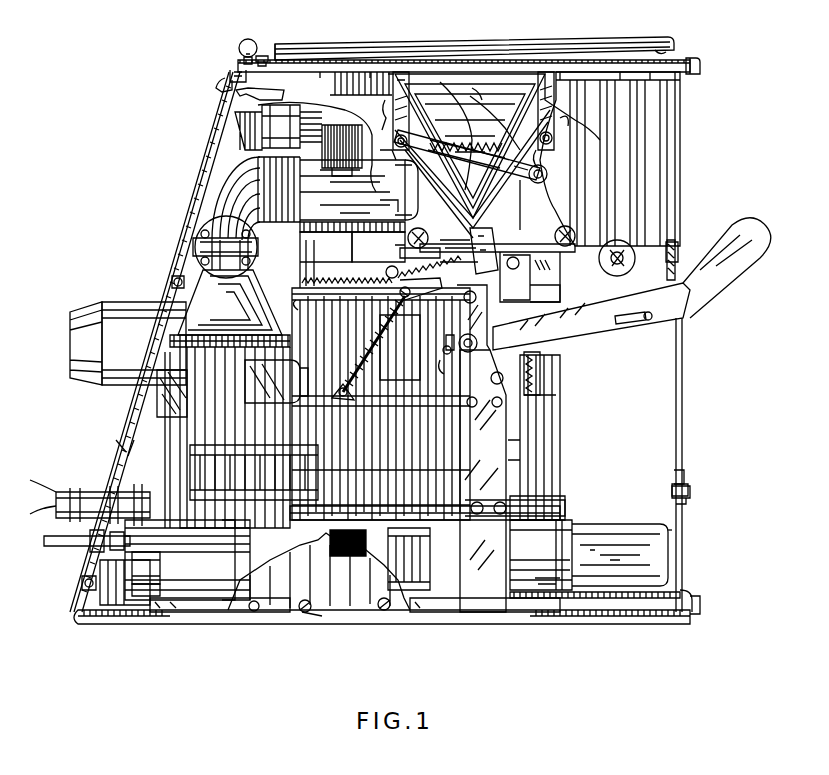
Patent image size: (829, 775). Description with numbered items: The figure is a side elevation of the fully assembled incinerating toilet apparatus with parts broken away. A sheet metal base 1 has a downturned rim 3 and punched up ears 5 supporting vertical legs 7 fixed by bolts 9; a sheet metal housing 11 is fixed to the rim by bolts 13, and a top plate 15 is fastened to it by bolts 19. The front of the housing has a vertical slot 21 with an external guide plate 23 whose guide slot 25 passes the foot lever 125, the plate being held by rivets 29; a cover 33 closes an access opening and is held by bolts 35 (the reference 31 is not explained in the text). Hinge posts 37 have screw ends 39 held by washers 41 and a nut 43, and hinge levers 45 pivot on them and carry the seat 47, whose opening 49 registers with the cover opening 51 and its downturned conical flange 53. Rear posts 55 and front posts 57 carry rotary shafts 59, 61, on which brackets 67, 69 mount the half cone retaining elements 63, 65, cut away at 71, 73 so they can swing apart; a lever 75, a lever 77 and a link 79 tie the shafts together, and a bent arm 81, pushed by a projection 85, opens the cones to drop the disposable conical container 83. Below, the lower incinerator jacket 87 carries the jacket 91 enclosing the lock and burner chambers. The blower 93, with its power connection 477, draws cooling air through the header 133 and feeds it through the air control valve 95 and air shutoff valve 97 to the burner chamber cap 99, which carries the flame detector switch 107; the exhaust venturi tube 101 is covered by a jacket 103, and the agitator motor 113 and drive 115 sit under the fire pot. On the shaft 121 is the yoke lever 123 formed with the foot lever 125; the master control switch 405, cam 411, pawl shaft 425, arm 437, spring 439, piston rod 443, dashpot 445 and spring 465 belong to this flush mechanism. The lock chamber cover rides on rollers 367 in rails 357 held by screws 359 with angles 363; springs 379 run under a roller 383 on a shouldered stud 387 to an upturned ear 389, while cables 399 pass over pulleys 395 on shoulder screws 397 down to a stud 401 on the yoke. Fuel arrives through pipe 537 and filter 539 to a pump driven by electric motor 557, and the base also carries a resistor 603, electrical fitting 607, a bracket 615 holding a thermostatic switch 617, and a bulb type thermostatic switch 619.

The sheet metal base 1 is at (104, 616).
The downturned rim or flange 3 is at (146, 614).
The punched up ears 5 is at (512, 568).
The vertical legs 7 is at (464, 476).
The bolts 9 is at (514, 574).
The sheet metal housing 11 is at (208, 162).
The bolts 13 is at (302, 614).
The top plate 15 is at (668, 63).
The bolts 19 is at (701, 66).
The vertical slot 21 is at (676, 458).
The external guide plate 23 is at (684, 464).
The guide slot 25 is at (684, 418).
The rivets 29 is at (682, 258).
The frame rod 31 is at (133, 456).
The cover 33 is at (116, 450).
The bolts 35 is at (170, 284).
The hinge posts 37 is at (238, 42).
The screw ends 39 is at (238, 96).
The washers 41 is at (236, 68).
The nut 43 is at (232, 90).
The hinge levers 45 is at (266, 52).
The seat 47 is at (435, 44).
The seat opening 49 is at (350, 44).
The cover opening 51 is at (585, 50).
The downturned conical flange 53 is at (566, 112).
The rear posts 55 is at (404, 96).
The front posts 57 is at (540, 92).
The rotary shaft 59 is at (456, 156).
The rotary shaft 61 is at (538, 138).
The half cone retaining element 63 is at (456, 188).
The half cone retaining element 65 is at (508, 204).
The bracket 67 is at (390, 178).
The bracket 69 is at (566, 120).
The cut away arc 71 is at (456, 104).
The cut away arc 73 is at (474, 116).
The lever 75 is at (392, 86).
The lever 77 is at (542, 182).
The link 79 is at (455, 138).
The bent arm 81 is at (512, 140).
The disposable conical container 83 is at (470, 88).
The projection 85 is at (462, 270).
The lower incinerator jacket 87 is at (386, 450).
The jacket 91 is at (404, 360).
The blower 93 is at (230, 416).
The air control valve 95 is at (194, 242).
The air shutoff valve 97 is at (270, 232).
The burner chamber cap 99 is at (398, 186).
The exhaust venturi tube 101 is at (78, 312).
The jacket 103 is at (118, 312).
The flame detector switch 107 is at (406, 148).
The agitator motor 113 is at (602, 528).
The drive 115 is at (409, 559).
The shaft 121 is at (452, 366).
The yoke lever or bail 123 is at (602, 332).
The foot lever 125 is at (716, 298).
The header 133 is at (302, 462).
The rail 357 is at (534, 252).
The screws 359 is at (534, 272).
The angles 363 is at (352, 255).
The rollers 367 is at (430, 226).
The spring 379 is at (350, 292).
The roller 383 is at (398, 242).
The shouldered stud 387 is at (386, 272).
The upturned ear 389 is at (298, 290).
The pulley 395 is at (588, 280).
The shoulder screw 397 is at (610, 272).
The cable 399 is at (660, 262).
The stud 401 is at (630, 324).
The master control switch 405 is at (478, 226).
The cam 411 is at (450, 366).
The pawl shaft 425 is at (496, 376).
The arm 437 is at (428, 318).
The spring or motor 439 is at (360, 344).
The piston rod 443 is at (544, 372).
The dashpot 445 is at (560, 458).
The spring or motor 465 is at (540, 356).
The power connection 477 is at (272, 356).
The pipe 537 is at (54, 548).
The filter 539 is at (140, 558).
The electric motor 557 is at (140, 588).
The resistor 603 is at (200, 530).
The electrical fitting 607 is at (118, 486).
The bracket 615 is at (348, 543).
The thermostatic switch 617 is at (344, 520).
The bulb type adjustable thermostatic switch 619 is at (640, 600).